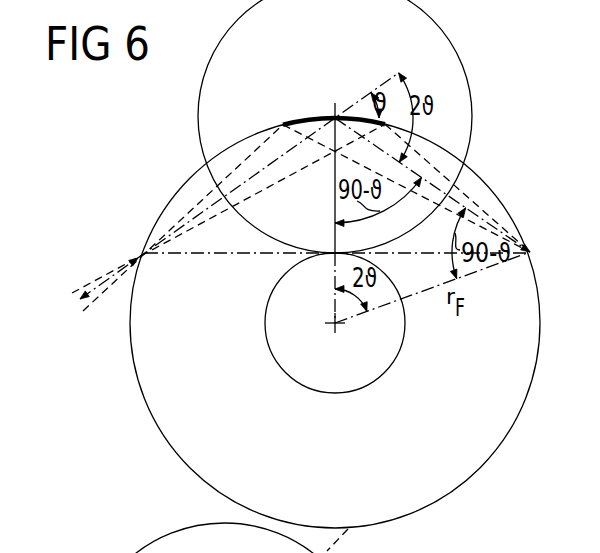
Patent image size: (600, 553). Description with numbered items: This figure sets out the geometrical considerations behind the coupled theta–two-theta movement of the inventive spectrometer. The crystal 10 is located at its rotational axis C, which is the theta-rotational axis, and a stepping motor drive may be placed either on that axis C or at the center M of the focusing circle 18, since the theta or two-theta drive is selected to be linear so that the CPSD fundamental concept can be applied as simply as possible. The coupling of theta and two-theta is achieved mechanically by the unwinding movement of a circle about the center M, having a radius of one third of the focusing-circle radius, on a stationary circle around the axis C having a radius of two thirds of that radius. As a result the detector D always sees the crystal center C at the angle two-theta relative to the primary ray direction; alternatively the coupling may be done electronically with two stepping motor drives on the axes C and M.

The crystal 10 is at (293, 118).
The focusing circle 18 is at (498, 441).
The rotational axis of the crystal C is at (327, 167).
The center of the focusing circle M is at (328, 331).
The detector D is at (534, 252).